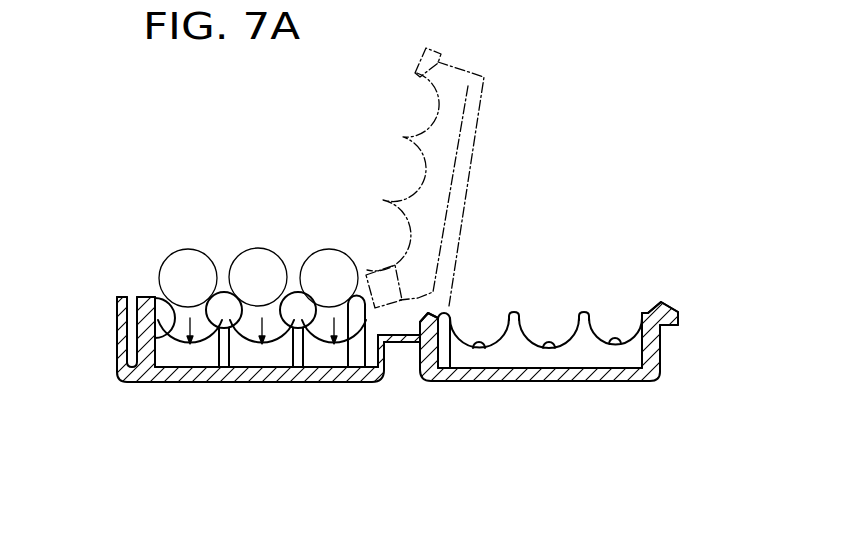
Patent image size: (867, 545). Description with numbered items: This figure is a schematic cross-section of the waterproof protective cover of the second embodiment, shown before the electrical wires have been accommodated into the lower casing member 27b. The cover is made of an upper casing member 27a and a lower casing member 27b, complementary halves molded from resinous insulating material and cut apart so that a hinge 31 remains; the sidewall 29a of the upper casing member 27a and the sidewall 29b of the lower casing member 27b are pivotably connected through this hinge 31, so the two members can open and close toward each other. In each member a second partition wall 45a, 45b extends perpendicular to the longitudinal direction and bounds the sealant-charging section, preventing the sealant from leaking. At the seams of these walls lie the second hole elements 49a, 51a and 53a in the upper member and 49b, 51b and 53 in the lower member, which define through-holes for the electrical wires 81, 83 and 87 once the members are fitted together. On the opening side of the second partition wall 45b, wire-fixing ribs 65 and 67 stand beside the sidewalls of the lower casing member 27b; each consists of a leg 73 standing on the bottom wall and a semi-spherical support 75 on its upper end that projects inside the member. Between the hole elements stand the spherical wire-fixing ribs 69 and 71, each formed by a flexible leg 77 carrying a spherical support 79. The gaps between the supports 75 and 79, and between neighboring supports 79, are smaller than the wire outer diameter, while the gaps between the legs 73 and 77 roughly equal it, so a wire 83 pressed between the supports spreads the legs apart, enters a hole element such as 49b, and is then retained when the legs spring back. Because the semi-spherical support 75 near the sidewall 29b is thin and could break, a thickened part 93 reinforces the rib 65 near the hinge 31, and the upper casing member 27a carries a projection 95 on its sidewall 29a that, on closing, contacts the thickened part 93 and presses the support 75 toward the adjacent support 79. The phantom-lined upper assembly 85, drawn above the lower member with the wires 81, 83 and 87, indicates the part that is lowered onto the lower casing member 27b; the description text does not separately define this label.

The upper casing member 27a is at (668, 372).
The lower casing member 27b is at (120, 373).
The sidewall of the upper casing member 29a is at (460, 347).
The sidewall of the lower casing member 29b is at (392, 380).
The hinge 31 is at (400, 342).
The second partition wall of the upper casing member 45a is at (583, 342).
The second partition wall of the lower casing member 45b is at (152, 357).
The second hole element 49a is at (473, 352).
The second hole element 49b is at (350, 370).
The second hole element 51a is at (548, 352).
The second hole element 51b is at (283, 380).
The second hole element 53 is at (183, 366).
The second hole element 53a is at (620, 352).
The wire-fixing rib 65 is at (355, 293).
The wire-fixing rib 67 is at (155, 293).
The spherical wire-fixing rib 69 is at (297, 290).
The spherical wire-fixing rib 71 is at (225, 293).
The leg 73 is at (386, 417).
The semi-spherical support 75 is at (190, 368).
The flexible leg 77 is at (236, 372).
The spherical support 79 is at (216, 325).
The electrical wire 81 is at (253, 258).
The electrical wire 83 is at (323, 262).
The cover 85 is at (593, 197).
The electrical wire 87 is at (188, 258).
The thickened part 93 is at (400, 293).
The projection 95 is at (443, 312).